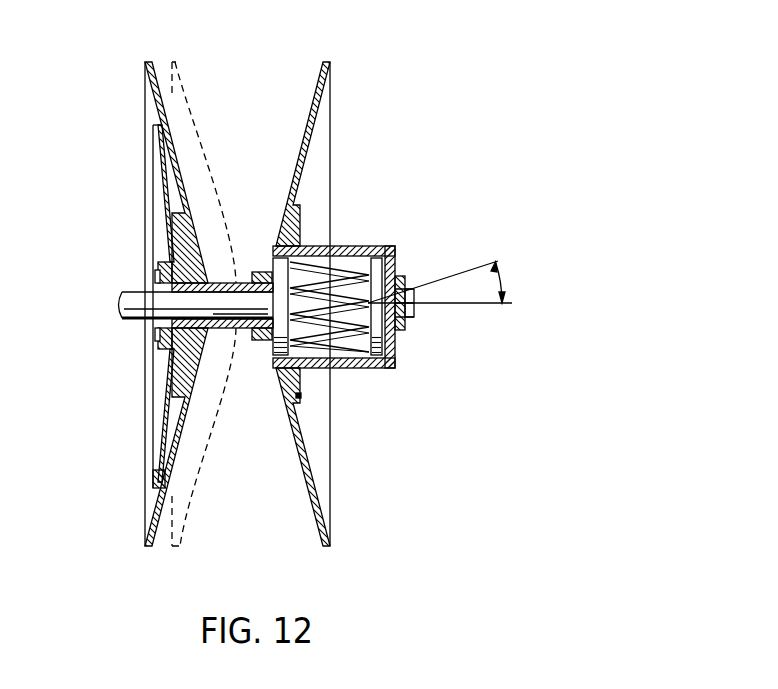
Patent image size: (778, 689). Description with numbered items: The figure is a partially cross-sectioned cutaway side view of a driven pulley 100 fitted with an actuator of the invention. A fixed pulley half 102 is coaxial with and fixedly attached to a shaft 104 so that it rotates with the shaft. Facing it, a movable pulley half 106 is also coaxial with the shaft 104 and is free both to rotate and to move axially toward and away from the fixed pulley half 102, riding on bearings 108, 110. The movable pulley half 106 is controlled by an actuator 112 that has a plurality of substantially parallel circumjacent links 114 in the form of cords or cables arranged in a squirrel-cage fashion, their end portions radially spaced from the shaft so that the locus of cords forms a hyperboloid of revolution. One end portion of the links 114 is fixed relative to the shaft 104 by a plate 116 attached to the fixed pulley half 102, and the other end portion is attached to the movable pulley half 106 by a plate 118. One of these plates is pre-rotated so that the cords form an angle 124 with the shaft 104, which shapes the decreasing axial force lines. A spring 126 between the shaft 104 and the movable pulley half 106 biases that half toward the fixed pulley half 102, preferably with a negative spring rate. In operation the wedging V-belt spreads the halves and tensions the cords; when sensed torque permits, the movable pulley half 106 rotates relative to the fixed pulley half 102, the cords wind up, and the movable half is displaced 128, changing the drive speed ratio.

The driven pulley 100 is at (385, 78).
The fixed pulley half 102 is at (331, 126).
The shaft 104 is at (121, 318).
The movable pulley half 106 is at (152, 101).
The bearing 108 is at (231, 372).
The bearing 110 is at (261, 333).
The actuator 112 is at (367, 234).
The links 114 is at (356, 341).
The plate 116 is at (376, 265).
The plate 118 is at (272, 268).
The angle 124 is at (507, 282).
The spring 126 is at (163, 208).
The displacement of movable pulley half 128 is at (189, 517).